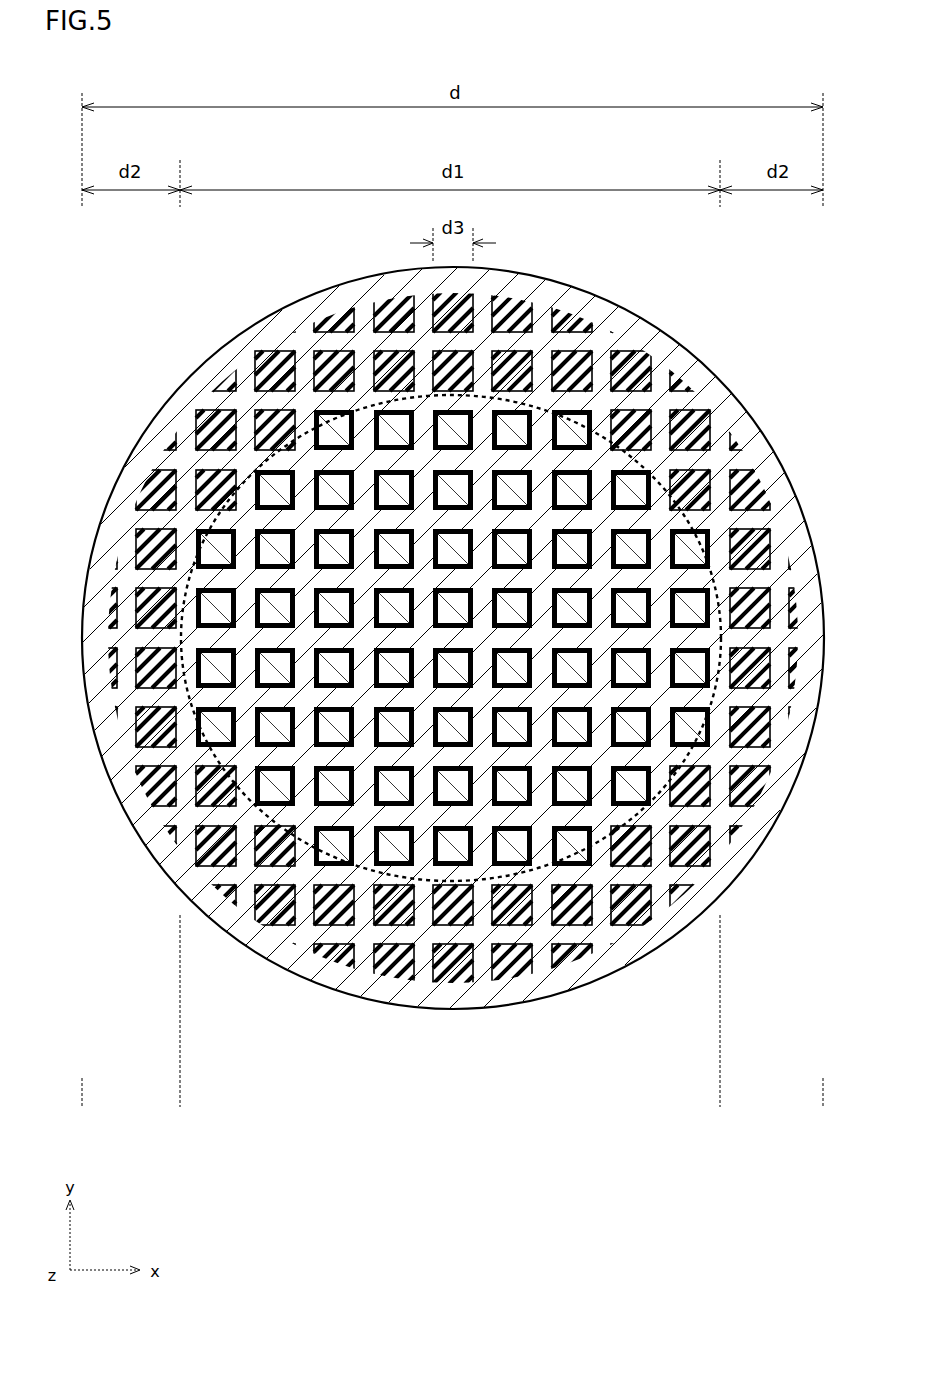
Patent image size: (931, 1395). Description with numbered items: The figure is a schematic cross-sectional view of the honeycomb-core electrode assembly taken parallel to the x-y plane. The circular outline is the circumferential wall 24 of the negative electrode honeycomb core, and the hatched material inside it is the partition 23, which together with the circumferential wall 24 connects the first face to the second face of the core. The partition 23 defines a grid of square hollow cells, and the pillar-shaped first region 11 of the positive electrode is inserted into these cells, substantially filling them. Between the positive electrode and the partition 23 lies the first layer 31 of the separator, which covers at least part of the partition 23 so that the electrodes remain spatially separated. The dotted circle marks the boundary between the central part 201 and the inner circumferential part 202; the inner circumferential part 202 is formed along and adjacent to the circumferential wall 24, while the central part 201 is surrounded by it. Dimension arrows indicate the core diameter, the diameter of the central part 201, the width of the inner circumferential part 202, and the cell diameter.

The first region 11 is at (562, 502).
The partition 23 is at (187, 460).
The circumferential wall 24 is at (334, 291).
The first layer 31 is at (255, 368).
The central part 201 is at (180, 1093).
The inner circumferential part 202 is at (811, 1097).